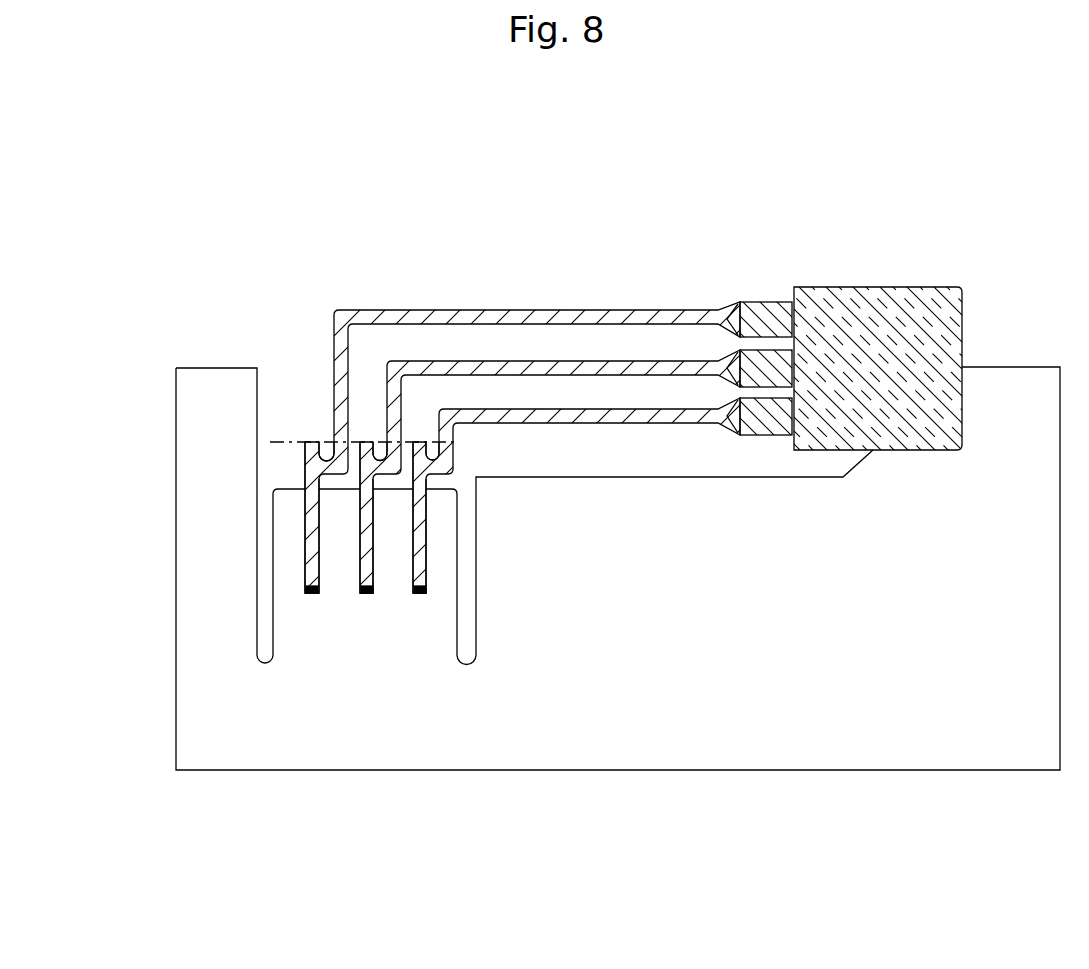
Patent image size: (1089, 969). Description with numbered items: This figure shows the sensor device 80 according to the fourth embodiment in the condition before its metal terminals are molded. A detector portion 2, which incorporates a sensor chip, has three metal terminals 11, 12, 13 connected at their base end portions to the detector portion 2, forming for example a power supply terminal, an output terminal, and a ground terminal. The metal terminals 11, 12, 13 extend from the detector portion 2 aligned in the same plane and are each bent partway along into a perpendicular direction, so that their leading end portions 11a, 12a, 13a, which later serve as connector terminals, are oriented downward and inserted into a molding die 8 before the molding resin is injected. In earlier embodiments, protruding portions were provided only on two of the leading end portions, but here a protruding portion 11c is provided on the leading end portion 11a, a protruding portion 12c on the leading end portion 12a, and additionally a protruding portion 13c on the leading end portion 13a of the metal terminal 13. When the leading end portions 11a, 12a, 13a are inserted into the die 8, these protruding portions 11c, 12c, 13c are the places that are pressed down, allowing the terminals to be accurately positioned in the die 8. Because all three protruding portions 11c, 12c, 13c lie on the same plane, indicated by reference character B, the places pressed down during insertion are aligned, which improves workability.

The detector portion 2 is at (888, 303).
The molding die 8 is at (917, 733).
The sensor device 80 is at (618, 618).
The metal terminal 11 is at (685, 409).
The metal terminal 12 is at (620, 361).
The metal terminal 13 is at (566, 318).
The leading end portion 11a is at (423, 528).
The leading end portion 12a is at (380, 540).
The leading end portion 13a is at (325, 540).
The protruding portion 11c is at (432, 444).
The protruding portion 12c is at (365, 443).
The protruding portion 13c is at (312, 441).
The plane of protruding portions B is at (266, 430).